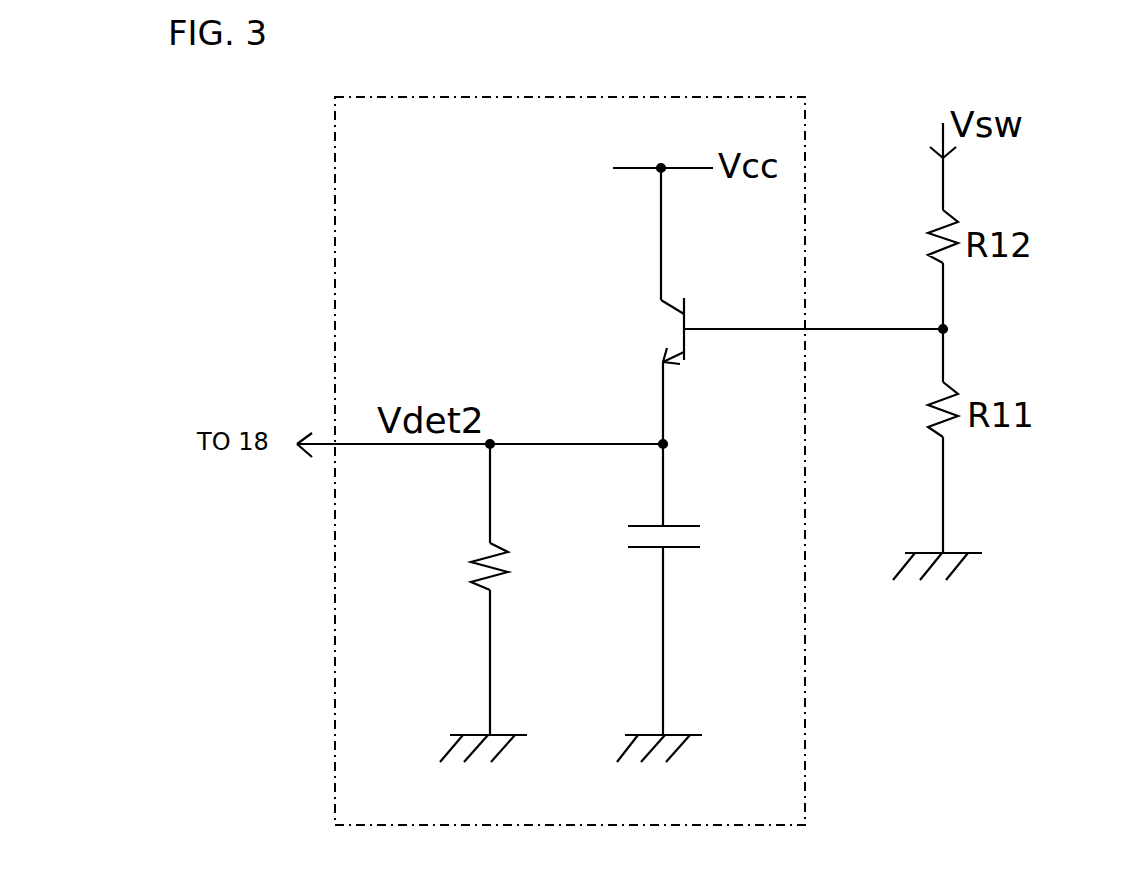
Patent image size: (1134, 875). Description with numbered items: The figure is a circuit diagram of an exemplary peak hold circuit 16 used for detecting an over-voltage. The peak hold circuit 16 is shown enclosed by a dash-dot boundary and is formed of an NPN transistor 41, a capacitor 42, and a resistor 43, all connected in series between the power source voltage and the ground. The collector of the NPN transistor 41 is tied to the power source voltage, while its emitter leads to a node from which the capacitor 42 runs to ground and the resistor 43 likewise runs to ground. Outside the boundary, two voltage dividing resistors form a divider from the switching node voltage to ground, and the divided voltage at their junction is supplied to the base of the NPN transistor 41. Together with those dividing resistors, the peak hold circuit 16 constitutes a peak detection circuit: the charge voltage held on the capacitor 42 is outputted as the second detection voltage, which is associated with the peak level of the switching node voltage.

The peak hold circuit 16 is at (805, 99).
The NPN transistor 41 is at (683, 313).
The capacitor 42 is at (685, 550).
The resistor 43 is at (497, 578).